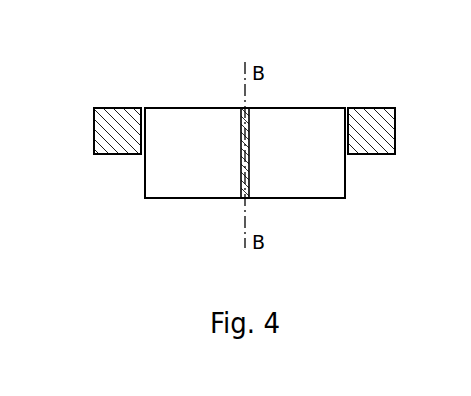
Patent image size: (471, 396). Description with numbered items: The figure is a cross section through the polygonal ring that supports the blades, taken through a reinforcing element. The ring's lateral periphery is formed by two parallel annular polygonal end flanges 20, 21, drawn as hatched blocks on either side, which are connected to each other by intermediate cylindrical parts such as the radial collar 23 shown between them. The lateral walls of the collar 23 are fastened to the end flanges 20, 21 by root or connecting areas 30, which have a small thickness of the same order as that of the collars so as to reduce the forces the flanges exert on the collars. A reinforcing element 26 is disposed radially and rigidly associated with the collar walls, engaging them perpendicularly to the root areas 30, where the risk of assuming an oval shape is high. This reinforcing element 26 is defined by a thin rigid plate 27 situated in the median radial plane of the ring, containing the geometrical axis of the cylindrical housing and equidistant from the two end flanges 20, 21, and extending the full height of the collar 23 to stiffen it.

The annular polygonal end flange 20 is at (373, 134).
The annular polygonal end flange 21 is at (99, 133).
The radial collar 23 is at (330, 173).
The reinforcing element 26 is at (242, 137).
The thin rigid plate 27 is at (241, 173).
The root area 30 is at (146, 133).